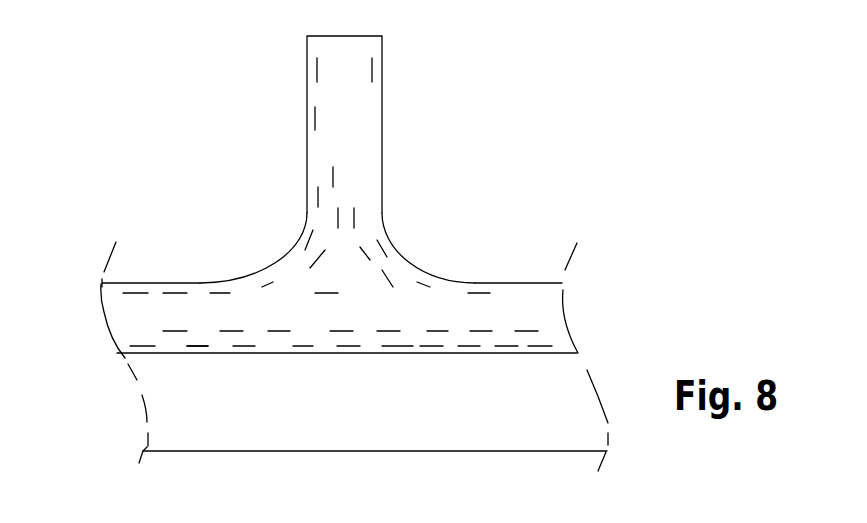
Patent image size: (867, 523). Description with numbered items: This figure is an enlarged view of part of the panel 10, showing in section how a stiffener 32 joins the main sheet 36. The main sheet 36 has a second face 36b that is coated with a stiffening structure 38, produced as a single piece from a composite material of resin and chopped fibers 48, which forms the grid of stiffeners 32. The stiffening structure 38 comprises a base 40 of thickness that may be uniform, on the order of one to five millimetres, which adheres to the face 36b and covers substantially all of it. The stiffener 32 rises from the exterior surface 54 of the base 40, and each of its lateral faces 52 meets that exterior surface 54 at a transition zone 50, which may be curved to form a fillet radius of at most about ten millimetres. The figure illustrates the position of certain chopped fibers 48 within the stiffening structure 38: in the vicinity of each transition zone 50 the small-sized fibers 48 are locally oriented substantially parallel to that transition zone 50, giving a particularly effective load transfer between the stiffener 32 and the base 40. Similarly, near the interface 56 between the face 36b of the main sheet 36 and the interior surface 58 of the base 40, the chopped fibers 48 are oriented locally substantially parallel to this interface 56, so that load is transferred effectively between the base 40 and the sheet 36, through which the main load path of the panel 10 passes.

The panel 10 is at (658, 346).
The stiffener 32 is at (357, 128).
The main sheet 36 is at (173, 413).
The second face of the main sheet 36b is at (393, 353).
The stiffening structure 38 is at (570, 313).
The base 40 is at (137, 317).
The chopped fibers 48 is at (302, 247).
The transition zone 50 is at (299, 245).
The lateral face of the stiffener 52 is at (307, 98).
The exterior surface of the base 54 is at (177, 283).
The interface 56 is at (157, 356).
The interior surface of the base 58 is at (203, 355).